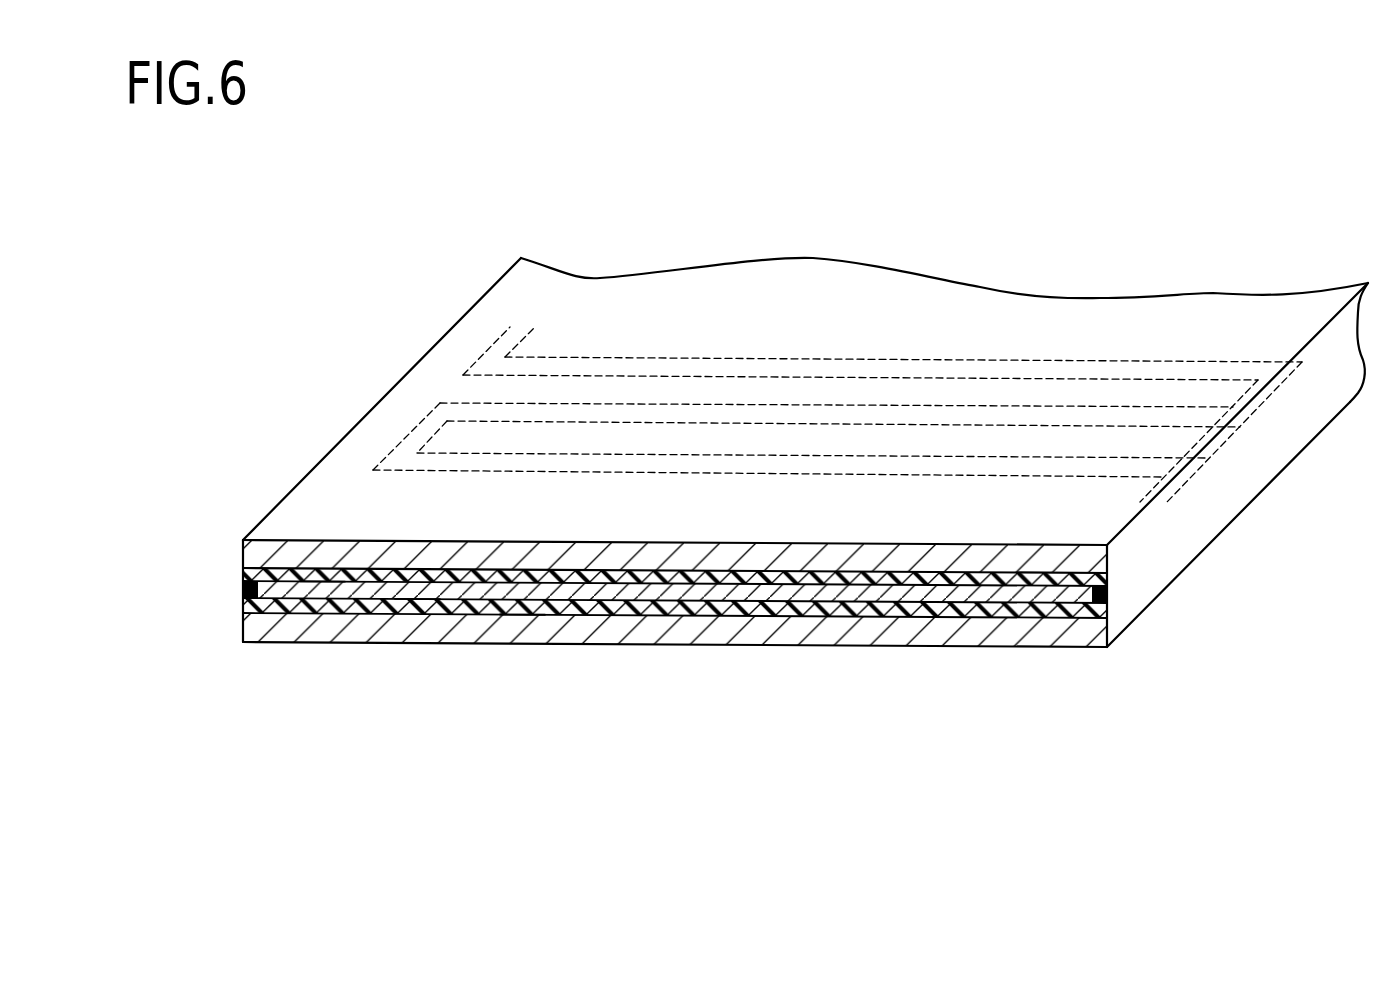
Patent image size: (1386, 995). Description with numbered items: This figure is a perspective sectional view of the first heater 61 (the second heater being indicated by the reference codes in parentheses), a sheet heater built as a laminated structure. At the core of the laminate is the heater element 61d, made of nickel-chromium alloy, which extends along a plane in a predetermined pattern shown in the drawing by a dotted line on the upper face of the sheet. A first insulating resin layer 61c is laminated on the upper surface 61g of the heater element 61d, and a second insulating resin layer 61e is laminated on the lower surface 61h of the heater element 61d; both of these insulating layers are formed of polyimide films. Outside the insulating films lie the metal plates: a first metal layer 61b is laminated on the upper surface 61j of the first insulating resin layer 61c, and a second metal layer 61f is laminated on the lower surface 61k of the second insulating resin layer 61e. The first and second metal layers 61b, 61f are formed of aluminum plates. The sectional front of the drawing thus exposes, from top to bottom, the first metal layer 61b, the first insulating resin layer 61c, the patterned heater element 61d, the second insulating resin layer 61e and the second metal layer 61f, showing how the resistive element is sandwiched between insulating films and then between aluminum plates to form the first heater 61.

The first heater 61 is at (1035, 186).
The first metal layer 61b is at (252, 565).
The first insulating resin layer 61c is at (250, 581).
The heater element 61d is at (1043, 365).
The second insulating resin layer 61e is at (243, 603).
The second metal layer 61f is at (245, 625).
The upper surface of the heater element 61g is at (322, 578).
The upper surface of the first insulating resin layer 61j is at (348, 586).
The lower surface of the heater element 61h is at (415, 602).
The lower surface of the second insulating resin layer 61k is at (522, 617).